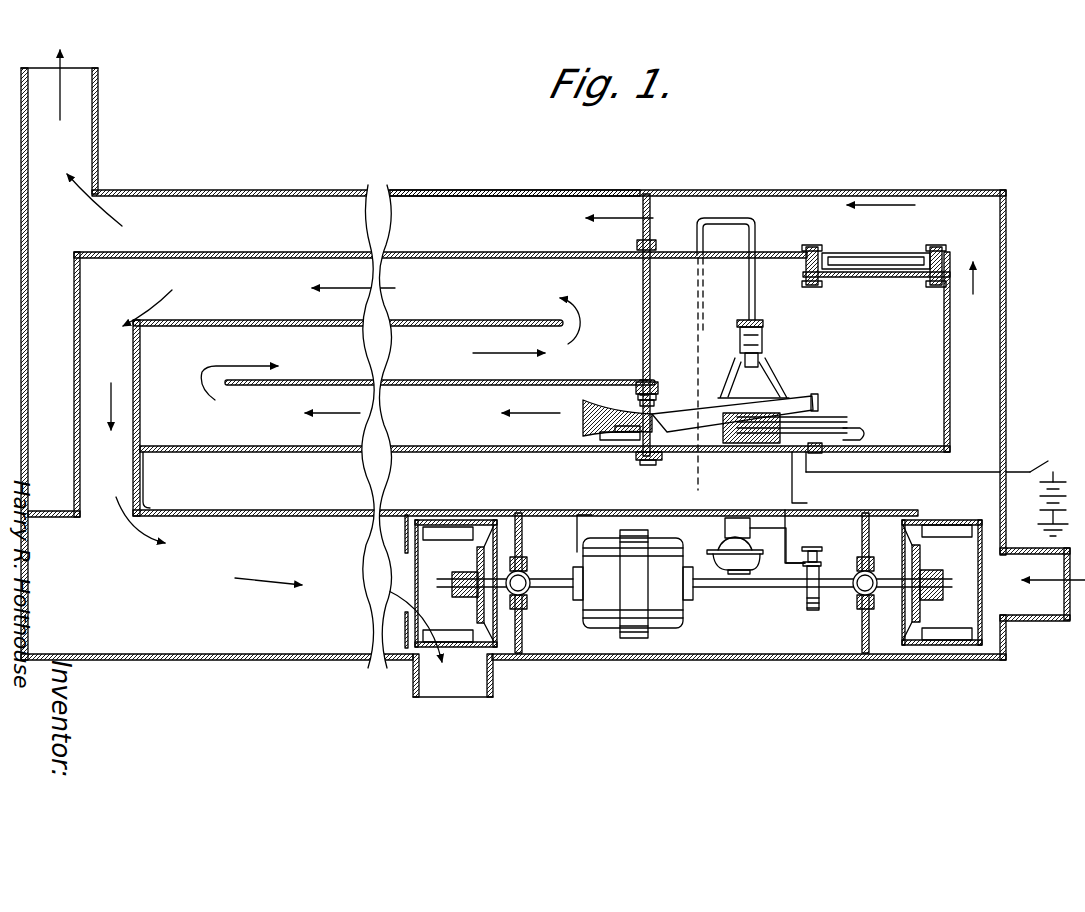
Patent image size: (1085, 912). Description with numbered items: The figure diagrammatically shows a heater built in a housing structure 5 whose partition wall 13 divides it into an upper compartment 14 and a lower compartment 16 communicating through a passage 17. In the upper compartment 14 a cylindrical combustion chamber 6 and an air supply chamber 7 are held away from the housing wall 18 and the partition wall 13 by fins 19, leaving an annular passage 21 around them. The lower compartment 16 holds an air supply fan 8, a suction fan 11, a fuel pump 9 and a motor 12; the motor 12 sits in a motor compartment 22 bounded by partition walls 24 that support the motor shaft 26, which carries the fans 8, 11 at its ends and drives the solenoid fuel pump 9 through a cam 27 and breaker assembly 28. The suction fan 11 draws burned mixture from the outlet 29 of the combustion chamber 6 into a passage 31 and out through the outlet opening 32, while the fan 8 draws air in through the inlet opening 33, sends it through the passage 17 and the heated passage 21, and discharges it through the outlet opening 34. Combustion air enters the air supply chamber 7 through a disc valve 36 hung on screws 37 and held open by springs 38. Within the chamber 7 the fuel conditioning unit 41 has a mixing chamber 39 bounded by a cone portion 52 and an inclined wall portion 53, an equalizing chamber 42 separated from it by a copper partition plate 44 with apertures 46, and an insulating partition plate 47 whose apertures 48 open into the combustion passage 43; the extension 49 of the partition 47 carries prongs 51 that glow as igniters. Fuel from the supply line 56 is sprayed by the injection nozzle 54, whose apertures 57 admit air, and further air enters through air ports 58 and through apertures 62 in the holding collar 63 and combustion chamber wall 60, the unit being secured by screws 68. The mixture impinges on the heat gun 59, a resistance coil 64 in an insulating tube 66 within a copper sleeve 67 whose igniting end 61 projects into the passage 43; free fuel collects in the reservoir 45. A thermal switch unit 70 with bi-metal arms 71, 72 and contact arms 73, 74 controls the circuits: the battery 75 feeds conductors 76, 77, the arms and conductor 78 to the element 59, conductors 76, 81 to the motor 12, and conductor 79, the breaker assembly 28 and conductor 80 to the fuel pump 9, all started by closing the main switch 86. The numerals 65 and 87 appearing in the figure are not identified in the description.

The housing structure 5 is at (856, 190).
The combustion chamber 6 is at (351, 400).
The air supply chamber 7 is at (910, 328).
The air supply fan 8 is at (962, 535).
The fuel pump 9 is at (735, 546).
The suction fan 11 is at (445, 530).
The motor 12 is at (633, 628).
The partition wall 13 is at (262, 510).
The upper compartment 14 is at (640, 217).
The lower compartment 16 is at (400, 552).
The passage 17 is at (957, 491).
The housing wall 18 is at (464, 190).
The fins 19 is at (648, 202).
The annular passage 21 is at (776, 488).
The motor compartment 22 is at (694, 600).
The partition walls 24 is at (523, 631).
The motor shaft 26 is at (705, 590).
The cam 27 is at (806, 610).
The breaker assembly 28 is at (822, 566).
The outlet 29 is at (110, 522).
The passage 31 is at (216, 630).
The outlet opening 32 is at (432, 688).
The inlet opening 33 is at (1042, 600).
The outlet opening 34 is at (85, 107).
The valve 36 is at (905, 277).
The screws 37 is at (830, 255).
The springs 38 is at (810, 258).
The mixing chamber 39 is at (800, 383).
The fuel conditioning unit 41 is at (796, 395).
The equalizing chamber 42 is at (674, 405).
The passage 43 is at (428, 371).
The partition plate 44 is at (714, 374).
The reservoir 45 is at (735, 445).
The apertures 46 is at (735, 406).
The partition plate 47 is at (647, 395).
The apertures 48 is at (665, 400).
The extension 49 is at (612, 400).
The prongs 51 is at (592, 412).
The cone portion 52 is at (770, 356).
The inclined wall portion 53 is at (738, 488).
The injection nozzle 54 is at (740, 322).
The supply line 56 is at (738, 218).
The apertures 57 is at (739, 330).
The air ports 58 is at (778, 376).
The heat gun 59 is at (762, 444).
The combustion chamber wall 60 is at (651, 291).
The igniting portion 61 is at (608, 440).
The apertures 62 is at (664, 392).
The holding collar 63 is at (650, 462).
The resistance coil 64 is at (660, 452).
The bracket arm 65 is at (641, 380).
The insulating tube 66 is at (630, 440).
The copper tubular sleeve 67 is at (598, 432).
The screws 68 is at (657, 384).
The thermal switch unit 70 is at (852, 416).
The bi-metal contact arm 71 is at (845, 422).
The bi-metal contact arm 72 is at (867, 461).
The contact arm 73 is at (850, 428).
The contact arm 74 is at (862, 438).
The battery 75 is at (1045, 500).
The conductor 76 is at (974, 468).
The conductor 77 is at (825, 457).
The conductor 78 is at (828, 413).
The conductor 79 is at (807, 500).
The conductor 80 is at (788, 530).
The conductor 81 is at (600, 520).
The main switch 86 is at (1042, 467).
The partition wall 87 is at (513, 258).